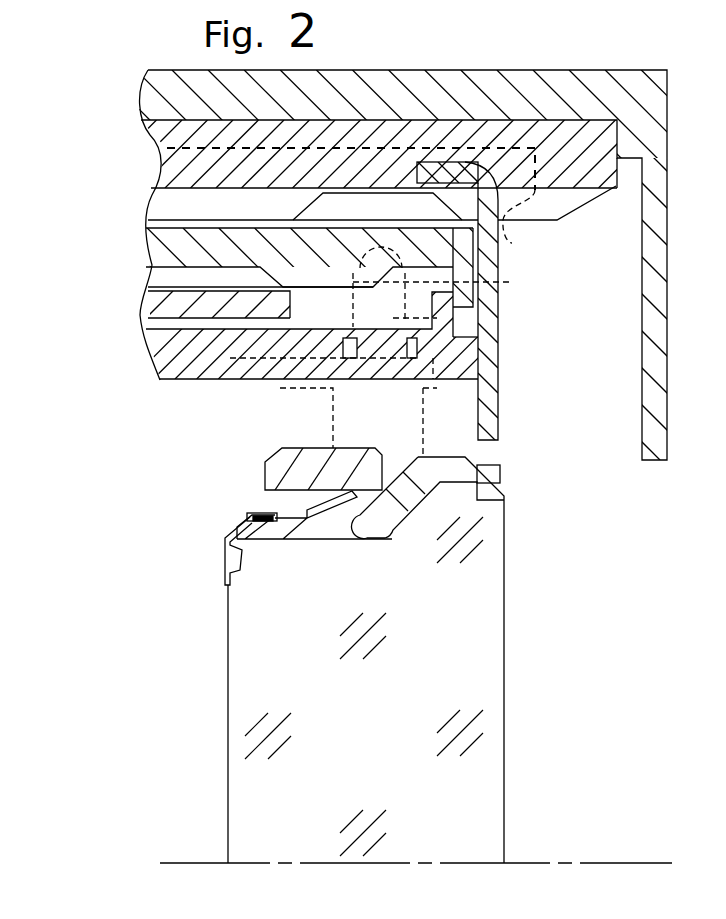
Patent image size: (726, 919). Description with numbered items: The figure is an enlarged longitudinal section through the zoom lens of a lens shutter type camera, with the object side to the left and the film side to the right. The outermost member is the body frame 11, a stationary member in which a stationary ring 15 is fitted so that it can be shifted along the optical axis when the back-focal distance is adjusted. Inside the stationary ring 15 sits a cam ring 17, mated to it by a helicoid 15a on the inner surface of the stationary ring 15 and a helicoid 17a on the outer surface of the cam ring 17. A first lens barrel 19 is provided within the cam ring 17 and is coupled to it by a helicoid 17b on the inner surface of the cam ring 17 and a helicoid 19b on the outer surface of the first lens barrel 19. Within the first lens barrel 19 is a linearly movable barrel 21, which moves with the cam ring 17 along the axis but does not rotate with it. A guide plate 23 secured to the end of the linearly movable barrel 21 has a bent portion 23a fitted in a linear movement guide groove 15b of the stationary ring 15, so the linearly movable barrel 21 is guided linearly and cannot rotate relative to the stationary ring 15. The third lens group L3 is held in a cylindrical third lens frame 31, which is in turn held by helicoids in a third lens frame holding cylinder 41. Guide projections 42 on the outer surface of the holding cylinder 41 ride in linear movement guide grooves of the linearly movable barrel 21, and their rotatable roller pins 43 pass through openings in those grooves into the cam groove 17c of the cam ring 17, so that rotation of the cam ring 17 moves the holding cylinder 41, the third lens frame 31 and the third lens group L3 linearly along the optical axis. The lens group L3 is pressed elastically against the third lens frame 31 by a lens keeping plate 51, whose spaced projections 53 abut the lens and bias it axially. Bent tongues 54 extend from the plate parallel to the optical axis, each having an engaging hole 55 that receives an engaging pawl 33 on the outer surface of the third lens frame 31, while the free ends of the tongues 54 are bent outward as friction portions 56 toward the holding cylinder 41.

The body frame 11 is at (150, 100).
The stationary ring 15 is at (167, 148).
The helicoid 15a is at (167, 213).
The linear movement guide groove 15b is at (557, 222).
The cam ring 17 is at (165, 245).
The helicoid 17a is at (330, 207).
The helicoid 17b is at (325, 283).
The cam groove 17c is at (490, 285).
The first lens barrel 19 is at (162, 312).
The helicoid 19b is at (165, 280).
The linearly movable barrel 21 is at (165, 353).
The guide plate 23 is at (486, 320).
The bent portion 23a is at (457, 177).
The third lens frame 31 is at (450, 472).
The engaging pawls 33 is at (318, 448).
The third lens frame holding cylinder 41 is at (280, 465).
The guide projections 42 is at (232, 380).
The roller pins 43 is at (487, 322).
The lens keeping plate 51 is at (248, 516).
The spaced projections 53 is at (225, 541).
The bent tongues 54 is at (262, 520).
The engaging hole 55 is at (307, 515).
The friction portions 56 is at (338, 503).
The third lens group L3 is at (402, 843).